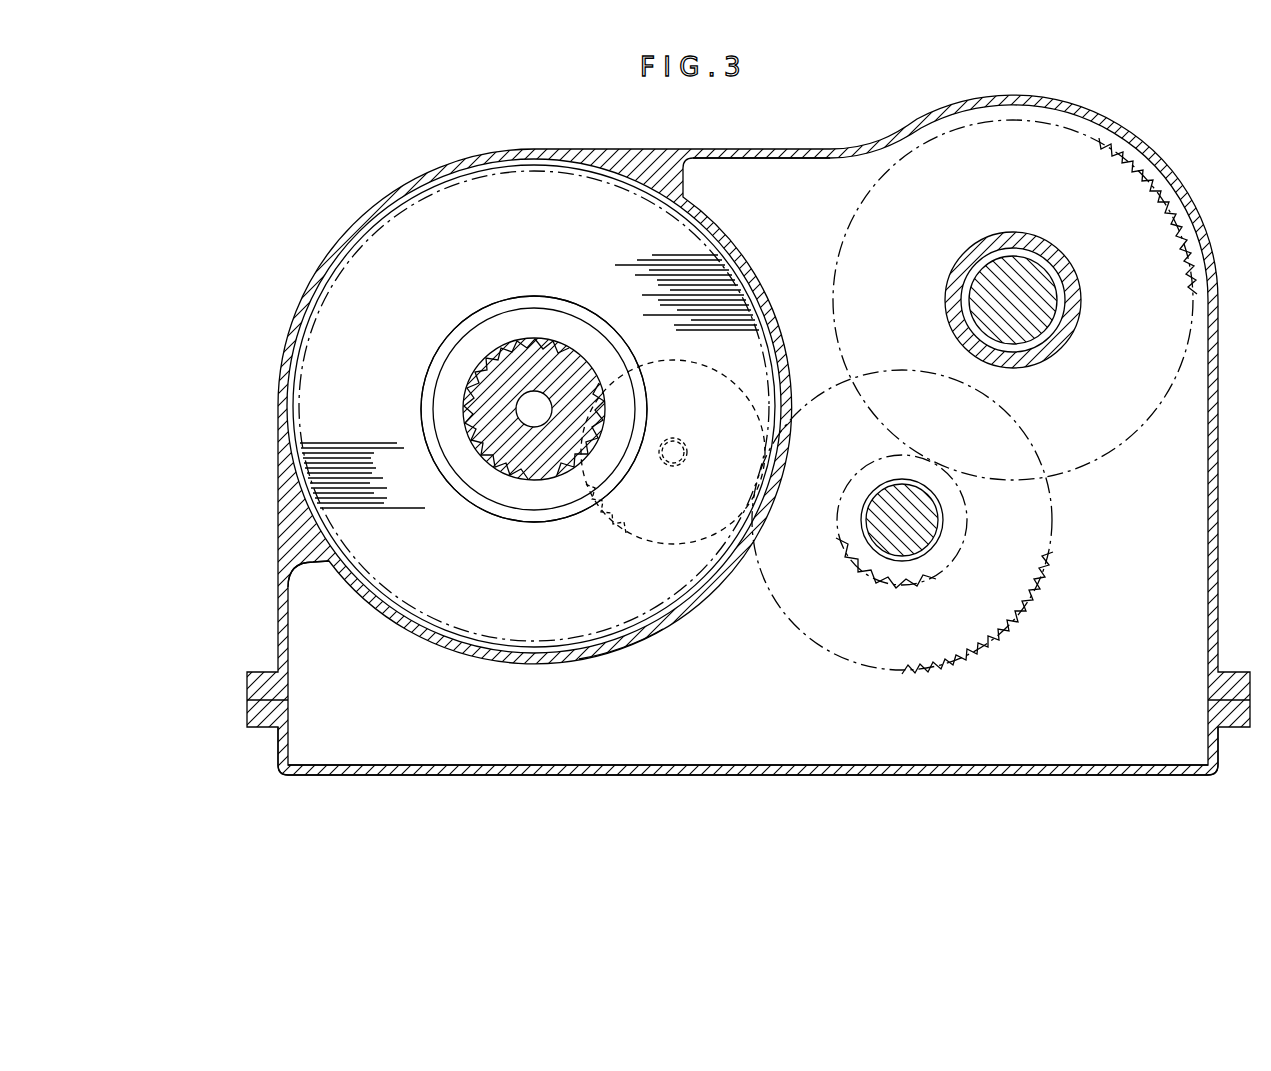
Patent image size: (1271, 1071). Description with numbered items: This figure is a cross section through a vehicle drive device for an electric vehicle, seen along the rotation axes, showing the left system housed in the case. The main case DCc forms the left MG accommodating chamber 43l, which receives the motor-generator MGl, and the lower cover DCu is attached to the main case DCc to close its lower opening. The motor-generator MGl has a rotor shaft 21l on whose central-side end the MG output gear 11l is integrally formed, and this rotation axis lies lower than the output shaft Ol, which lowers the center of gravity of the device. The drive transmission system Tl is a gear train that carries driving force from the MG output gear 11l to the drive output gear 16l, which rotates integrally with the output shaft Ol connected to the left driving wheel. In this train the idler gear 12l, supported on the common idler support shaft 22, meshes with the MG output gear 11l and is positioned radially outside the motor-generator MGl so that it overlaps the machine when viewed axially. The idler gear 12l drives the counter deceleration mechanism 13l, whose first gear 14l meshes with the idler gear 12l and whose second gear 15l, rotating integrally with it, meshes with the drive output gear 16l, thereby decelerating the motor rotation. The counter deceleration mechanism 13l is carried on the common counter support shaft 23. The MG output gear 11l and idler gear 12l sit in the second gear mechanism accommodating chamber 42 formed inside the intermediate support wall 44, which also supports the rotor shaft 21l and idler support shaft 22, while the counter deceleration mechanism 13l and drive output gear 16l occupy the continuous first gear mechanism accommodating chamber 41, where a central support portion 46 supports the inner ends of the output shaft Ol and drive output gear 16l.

The central support portion 46 is at (787, 180).
The drive output gear 16l is at (1165, 190).
The motor-generator MGl is at (338, 265).
The MG output gear 11l is at (536, 345).
The rotor shaft 21l is at (475, 370).
The left MG accommodating chamber 43l is at (408, 406).
The main case DCc is at (280, 508).
The intermediate support wall 44 is at (333, 621).
The idler gear 12l is at (618, 534).
The idler support shaft 22 is at (703, 435).
The second gear mechanism accommodating chamber 42 is at (673, 571).
The counter support shaft 23 is at (879, 500).
The second gear 15l is at (878, 579).
The first gear mechanism accommodating chamber 41 is at (851, 426).
The first gear 14l is at (1023, 620).
The drive transmission system Tl is at (851, 426).
The counter deceleration mechanism 13l is at (926, 558).
The output shaft Ol is at (1040, 320).
The lower cover DCu is at (303, 776).